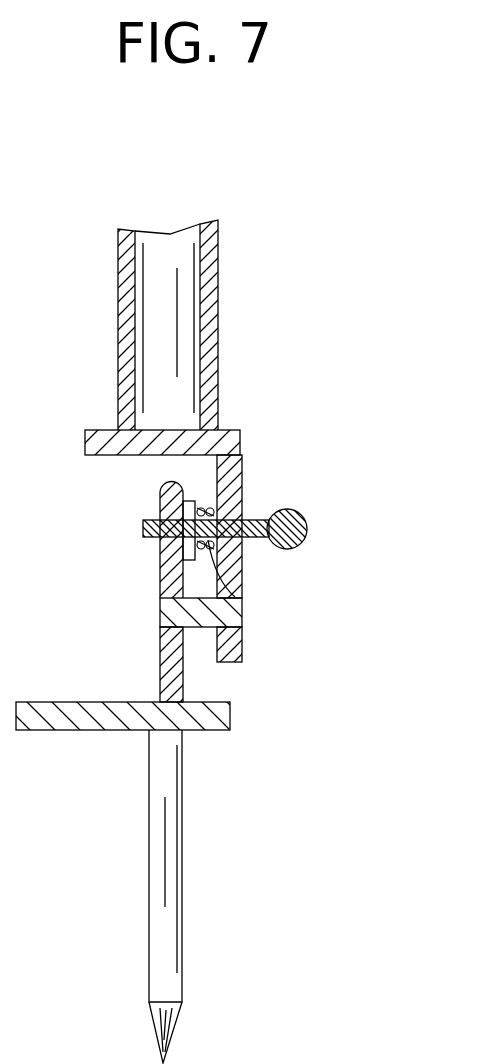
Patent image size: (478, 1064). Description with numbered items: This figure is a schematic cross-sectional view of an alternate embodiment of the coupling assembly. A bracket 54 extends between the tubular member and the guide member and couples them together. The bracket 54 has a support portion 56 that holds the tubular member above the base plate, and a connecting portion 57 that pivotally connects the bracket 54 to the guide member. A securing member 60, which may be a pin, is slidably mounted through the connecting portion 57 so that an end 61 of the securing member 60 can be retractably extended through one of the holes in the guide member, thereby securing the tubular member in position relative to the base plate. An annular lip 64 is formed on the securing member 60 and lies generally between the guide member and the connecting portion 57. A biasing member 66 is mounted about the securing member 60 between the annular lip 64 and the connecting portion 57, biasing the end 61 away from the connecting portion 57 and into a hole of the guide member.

The bracket 54 is at (233, 440).
The support portion 56 is at (88, 428).
The connecting portion 57 is at (233, 645).
The securing member 60 is at (308, 525).
The end 61 is at (143, 530).
The annular lip 64 is at (180, 503).
The biasing member 66 is at (244, 597).